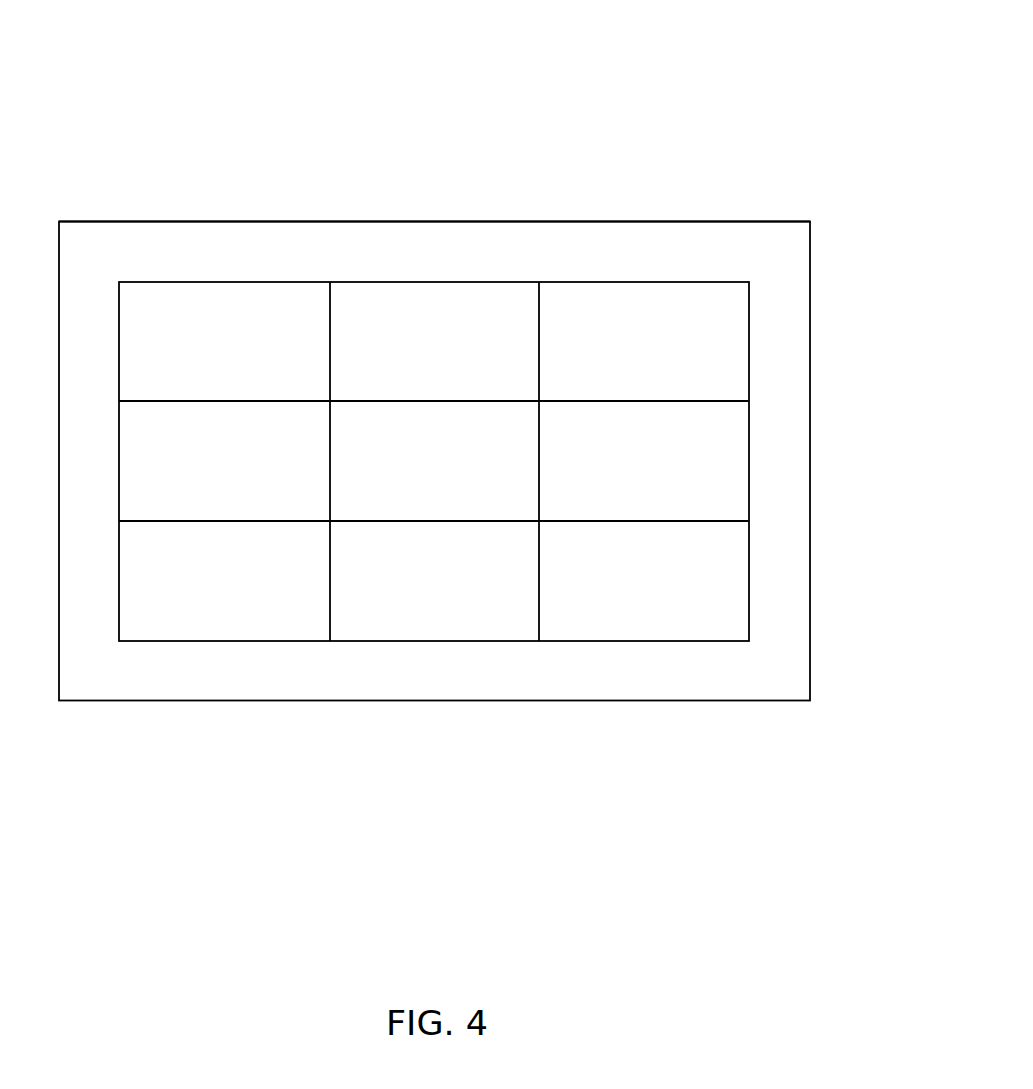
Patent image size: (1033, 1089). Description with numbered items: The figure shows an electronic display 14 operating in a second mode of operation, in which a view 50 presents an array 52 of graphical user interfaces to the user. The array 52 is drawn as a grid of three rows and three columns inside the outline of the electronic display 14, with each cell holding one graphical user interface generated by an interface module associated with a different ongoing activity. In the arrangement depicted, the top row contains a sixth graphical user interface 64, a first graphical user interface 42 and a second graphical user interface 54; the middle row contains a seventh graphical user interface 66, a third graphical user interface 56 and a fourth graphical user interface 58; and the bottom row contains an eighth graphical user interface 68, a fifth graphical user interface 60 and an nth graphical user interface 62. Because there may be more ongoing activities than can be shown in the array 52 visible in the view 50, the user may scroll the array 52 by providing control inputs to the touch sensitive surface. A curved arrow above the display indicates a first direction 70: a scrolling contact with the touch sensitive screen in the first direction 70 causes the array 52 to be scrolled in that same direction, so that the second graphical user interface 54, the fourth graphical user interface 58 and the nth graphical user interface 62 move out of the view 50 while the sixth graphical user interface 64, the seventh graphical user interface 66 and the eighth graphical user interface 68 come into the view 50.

The electronic display 14 is at (293, 221).
The view 50 is at (488, 240).
The array 52 is at (636, 280).
The sixth graphical user interface 64 is at (224, 341).
The first graphical user interface 42 is at (434, 341).
The second graphical user interface 54 is at (644, 341).
The seventh graphical user interface 66 is at (224, 461).
The third graphical user interface 56 is at (434, 461).
The fourth graphical user interface 58 is at (644, 461).
The eighth graphical user interface 68 is at (224, 581).
The fifth graphical user interface 60 is at (434, 581).
The nth graphical user interface 62 is at (644, 581).
The first direction 70 is at (629, 56).